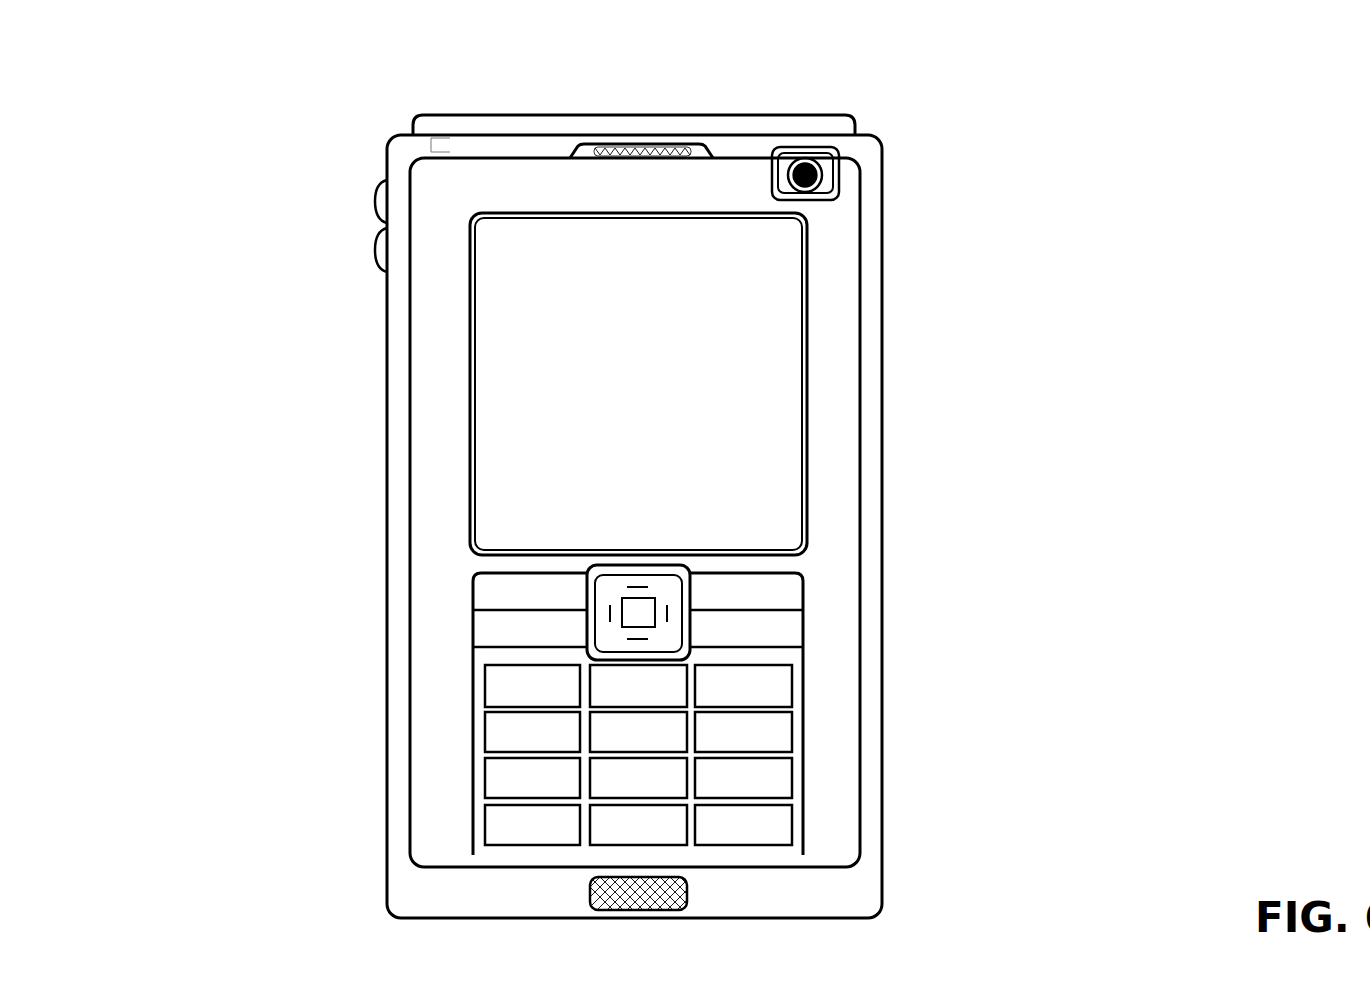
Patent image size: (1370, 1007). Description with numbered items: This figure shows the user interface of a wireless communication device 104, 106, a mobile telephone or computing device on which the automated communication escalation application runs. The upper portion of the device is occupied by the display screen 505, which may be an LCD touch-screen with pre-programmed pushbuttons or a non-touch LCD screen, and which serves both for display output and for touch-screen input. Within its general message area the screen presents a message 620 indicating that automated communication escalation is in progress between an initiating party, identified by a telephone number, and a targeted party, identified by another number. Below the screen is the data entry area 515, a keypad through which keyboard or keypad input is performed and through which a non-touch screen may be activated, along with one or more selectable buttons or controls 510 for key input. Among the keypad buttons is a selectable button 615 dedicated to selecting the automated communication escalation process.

The wireless communication device 104 is at (410, 127).
The wireless communication device 106 is at (617, 512).
The display screen 505 is at (756, 355).
The selectable buttons or controls 510 is at (505, 732).
The data entry area 515 is at (474, 600).
The selectable button 615 is at (640, 613).
The message 620 is at (762, 413).